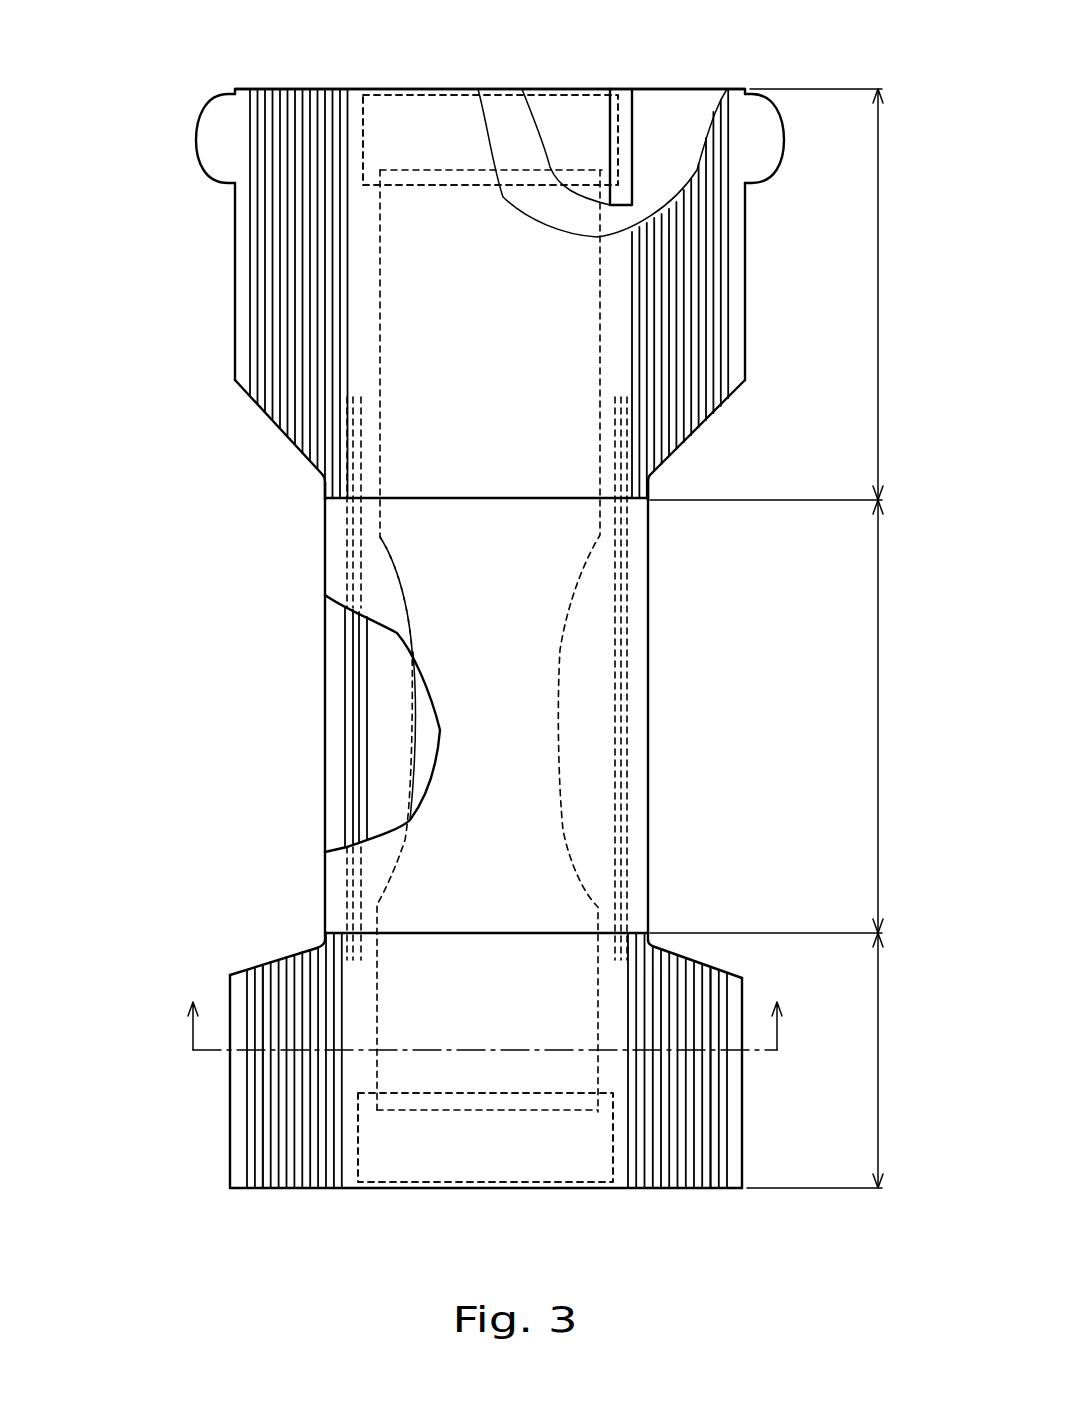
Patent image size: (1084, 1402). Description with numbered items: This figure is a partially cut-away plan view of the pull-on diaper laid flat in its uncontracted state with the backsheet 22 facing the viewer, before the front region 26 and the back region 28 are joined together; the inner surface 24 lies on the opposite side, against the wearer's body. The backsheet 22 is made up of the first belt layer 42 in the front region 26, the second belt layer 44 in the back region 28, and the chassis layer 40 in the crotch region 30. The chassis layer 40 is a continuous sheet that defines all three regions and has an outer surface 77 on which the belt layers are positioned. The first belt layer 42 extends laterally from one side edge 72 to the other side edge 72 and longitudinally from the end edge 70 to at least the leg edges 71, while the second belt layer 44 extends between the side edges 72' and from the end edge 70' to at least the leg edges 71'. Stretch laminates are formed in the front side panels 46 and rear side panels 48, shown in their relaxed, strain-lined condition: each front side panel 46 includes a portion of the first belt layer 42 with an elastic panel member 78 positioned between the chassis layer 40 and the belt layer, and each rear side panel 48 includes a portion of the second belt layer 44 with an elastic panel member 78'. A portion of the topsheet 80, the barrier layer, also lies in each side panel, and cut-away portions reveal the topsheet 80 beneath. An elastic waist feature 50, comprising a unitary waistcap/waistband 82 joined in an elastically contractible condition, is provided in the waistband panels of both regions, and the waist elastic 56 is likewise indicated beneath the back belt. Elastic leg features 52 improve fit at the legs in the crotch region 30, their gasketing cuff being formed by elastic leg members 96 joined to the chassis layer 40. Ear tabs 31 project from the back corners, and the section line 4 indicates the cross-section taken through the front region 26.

The backsheet 22 is at (603, 642).
The inner surface 24 is at (648, 692).
The front region 26 is at (819, 1060).
The back region 28 is at (772, 294).
The crotch region 30 is at (771, 716).
The ear tabs 31 is at (200, 130).
The chassis layer 40 is at (474, 581).
The first belt layer 42 is at (476, 1008).
The second belt layer 44 is at (481, 363).
The front side panel 46 is at (304, 1168).
The rear side panel 48 is at (293, 110).
The elastic waist feature 50 is at (505, 1188).
The elastic leg features 52 is at (343, 733).
The front waist elastic member 56 is at (408, 107).
The end edge 70 is at (486, 1228).
The end edge 70' is at (490, 45).
The leg edge 71 is at (521, 928).
The leg edge 71' is at (498, 440).
The side edge 72 is at (481, 1081).
The side edge 72' is at (492, 234).
The outer surface 77 is at (533, 608).
The elastic panel member 78 is at (479, 1117).
The elastic panel member 78' is at (430, 212).
The topsheet 80 is at (558, 139).
The unitary waistcap/waistband 82 is at (505, 1188).
The elastic leg members 96 is at (345, 810).
The section line 4- 4 is at (484, 1007).